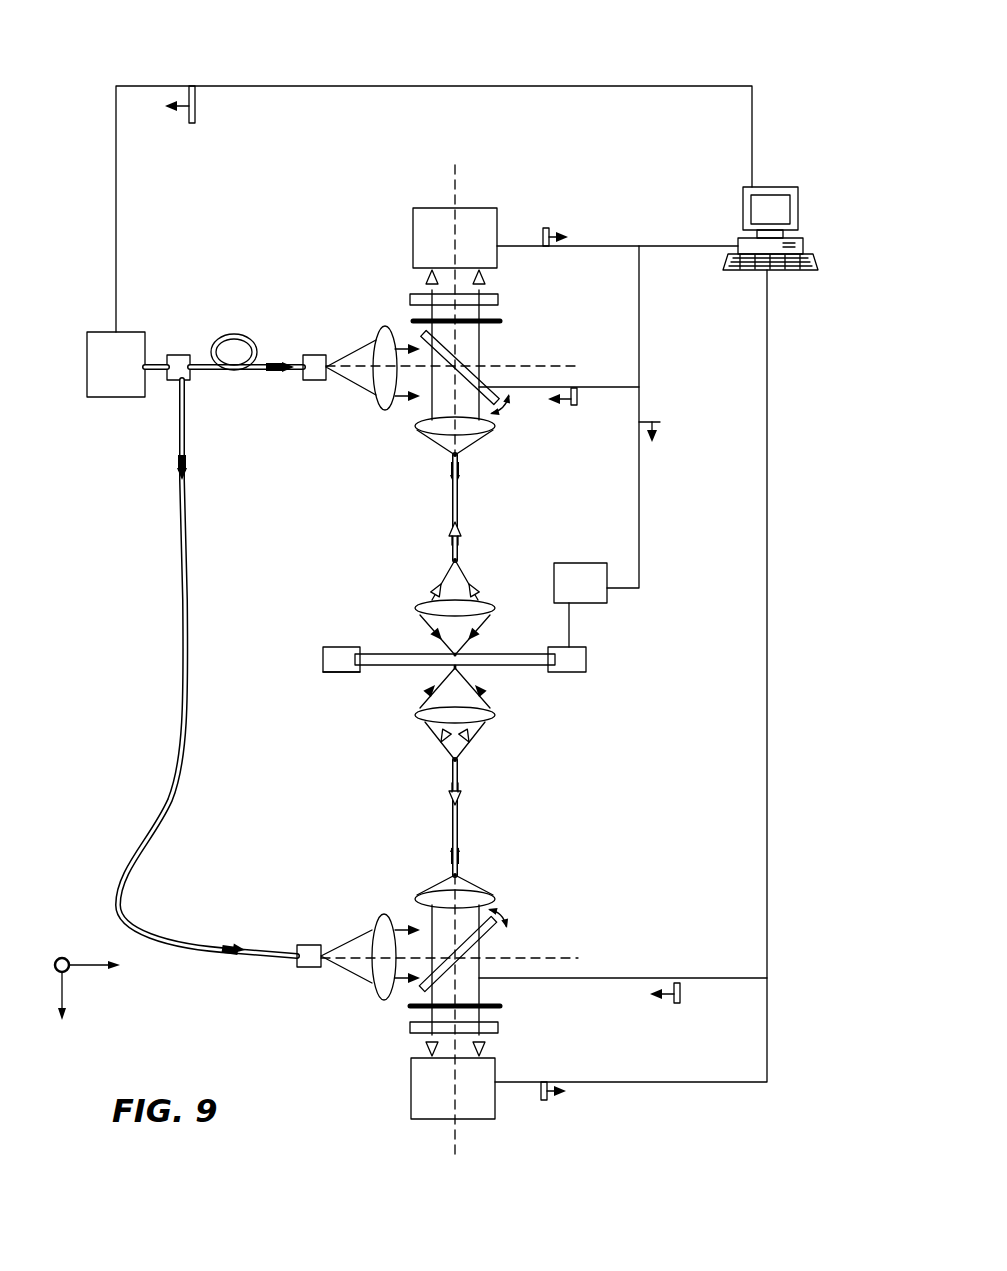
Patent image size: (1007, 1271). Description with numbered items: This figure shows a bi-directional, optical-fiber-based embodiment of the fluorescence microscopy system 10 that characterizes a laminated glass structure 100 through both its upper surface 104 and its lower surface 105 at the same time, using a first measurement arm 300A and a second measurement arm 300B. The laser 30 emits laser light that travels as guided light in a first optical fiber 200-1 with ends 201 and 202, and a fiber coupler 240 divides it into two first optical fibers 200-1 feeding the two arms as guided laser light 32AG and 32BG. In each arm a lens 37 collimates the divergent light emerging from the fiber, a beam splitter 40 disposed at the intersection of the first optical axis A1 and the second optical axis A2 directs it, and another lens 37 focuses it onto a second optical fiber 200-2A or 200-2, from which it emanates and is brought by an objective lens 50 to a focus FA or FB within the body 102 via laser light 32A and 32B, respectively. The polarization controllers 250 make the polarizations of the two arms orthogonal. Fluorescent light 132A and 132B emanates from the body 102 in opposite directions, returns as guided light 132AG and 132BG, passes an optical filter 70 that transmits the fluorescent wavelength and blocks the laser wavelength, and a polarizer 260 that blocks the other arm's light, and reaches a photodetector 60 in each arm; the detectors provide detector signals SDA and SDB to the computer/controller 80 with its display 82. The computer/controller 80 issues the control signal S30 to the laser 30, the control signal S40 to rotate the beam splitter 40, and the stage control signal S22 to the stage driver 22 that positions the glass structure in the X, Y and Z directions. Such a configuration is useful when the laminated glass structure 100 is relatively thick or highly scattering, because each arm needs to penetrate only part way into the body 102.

The fluorescence microscopy system 10 is at (172, 48).
The stage driver 22 is at (580, 605).
The laser 30 is at (116, 364).
The laser light 32A is at (372, 340).
The laser light 32B is at (480, 690).
The guided laser light 32AG is at (300, 374).
The guided laser light 32BG is at (178, 462).
The lens 37 is at (385, 326).
The beam splitter 40 is at (465, 348).
The objective lens 50 is at (425, 603).
The photodetector 60 is at (454, 663).
The optical filter 70 is at (500, 299).
The computer/controller 80 is at (820, 214).
The display 82 is at (780, 200).
The laminated glass structure 100 is at (540, 672).
The body 102 is at (548, 648).
The upper surface 104 is at (328, 647).
The lower surface 105 is at (360, 672).
The fluorescent light 132A is at (422, 282).
The fluorescent light 132B is at (480, 745).
The guided fluorescent light 132AG is at (462, 532).
The guided fluorescent light 132BG is at (462, 798).
The first optical fiber 200-1 is at (228, 335).
The second optical fiber 200-2 is at (450, 826).
The second optical fiber 200-2A is at (450, 498).
The optical fiber end 201 is at (452, 455).
The optical fiber end 202 is at (465, 562).
The fiber coupler 240 is at (192, 383).
The polarization controller 250 is at (310, 353).
The polarizer 260 is at (500, 321).
The first measurement arm 300A is at (320, 520).
The second measurement arm 300B is at (345, 784).
The first optical axis A1 is at (560, 367).
The second optical axis A2 is at (455, 190).
The focus FA is at (470, 650).
The focus FB is at (440, 668).
The control signal S30 is at (197, 123).
The stage control signal S22 is at (652, 420).
The control signal S40 is at (577, 405).
The detector signal SDA is at (547, 228).
The detector signal SDB is at (546, 1100).
The X-direction X is at (105, 972).
The Y-direction Y is at (54, 950).
The Z-direction Z is at (61, 1014).